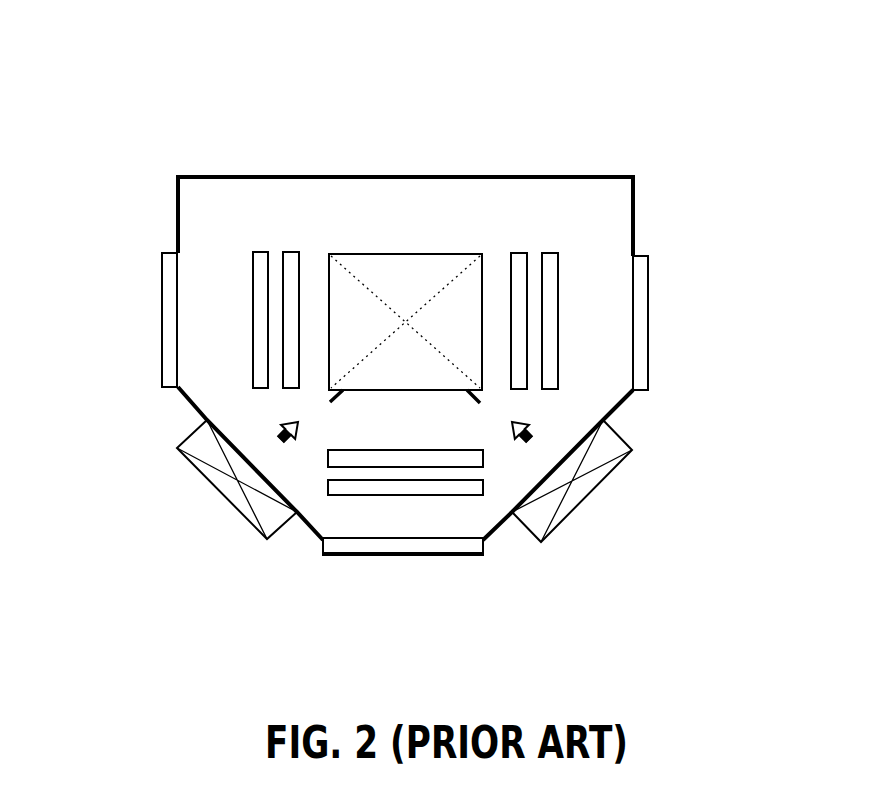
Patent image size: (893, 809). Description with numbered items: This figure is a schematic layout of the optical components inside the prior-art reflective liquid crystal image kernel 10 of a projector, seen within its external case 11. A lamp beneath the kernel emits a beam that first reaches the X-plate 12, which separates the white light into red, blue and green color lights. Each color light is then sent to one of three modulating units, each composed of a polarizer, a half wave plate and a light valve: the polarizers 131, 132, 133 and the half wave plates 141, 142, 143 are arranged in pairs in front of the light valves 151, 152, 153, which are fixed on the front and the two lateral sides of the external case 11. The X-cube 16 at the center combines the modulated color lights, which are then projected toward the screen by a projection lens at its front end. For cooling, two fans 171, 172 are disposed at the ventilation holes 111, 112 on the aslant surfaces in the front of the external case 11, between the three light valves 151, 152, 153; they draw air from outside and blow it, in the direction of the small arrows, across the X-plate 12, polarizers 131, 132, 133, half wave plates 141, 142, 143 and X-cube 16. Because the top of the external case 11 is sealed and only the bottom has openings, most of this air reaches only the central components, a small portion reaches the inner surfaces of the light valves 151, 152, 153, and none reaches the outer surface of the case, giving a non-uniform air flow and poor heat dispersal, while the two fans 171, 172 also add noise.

The image kernel 10 is at (652, 148).
The external case 11 is at (297, 177).
The X-plate 12 is at (343, 268).
The X-cube 16 is at (437, 267).
The ventilation hole 111 is at (572, 450).
The ventilation hole 112 is at (218, 425).
The polarizer 131 is at (513, 253).
The polarizer 132 is at (328, 465).
The polarizer 133 is at (284, 252).
The half wave plate 141 is at (542, 253).
The half wave plate 142 is at (330, 495).
The half wave plate 143 is at (255, 252).
The light valve 151 is at (648, 300).
The light valve 152 is at (397, 556).
The light valve 153 is at (162, 342).
The fan 171 is at (588, 497).
The fan 172 is at (205, 480).